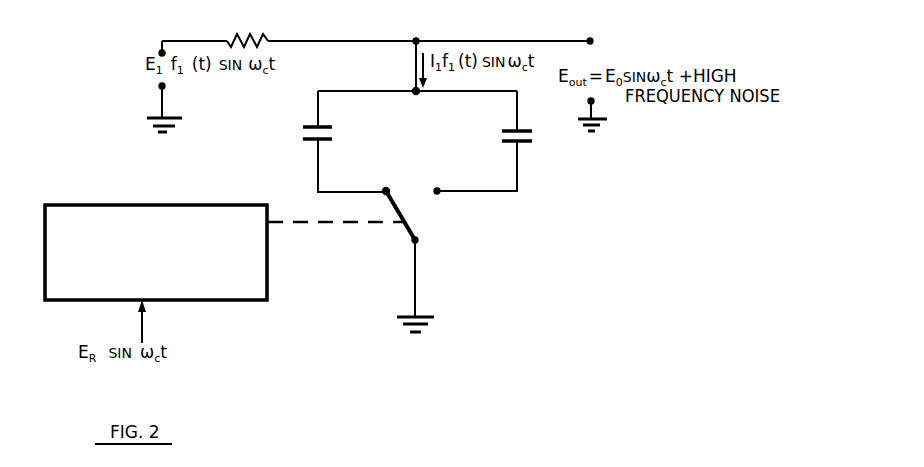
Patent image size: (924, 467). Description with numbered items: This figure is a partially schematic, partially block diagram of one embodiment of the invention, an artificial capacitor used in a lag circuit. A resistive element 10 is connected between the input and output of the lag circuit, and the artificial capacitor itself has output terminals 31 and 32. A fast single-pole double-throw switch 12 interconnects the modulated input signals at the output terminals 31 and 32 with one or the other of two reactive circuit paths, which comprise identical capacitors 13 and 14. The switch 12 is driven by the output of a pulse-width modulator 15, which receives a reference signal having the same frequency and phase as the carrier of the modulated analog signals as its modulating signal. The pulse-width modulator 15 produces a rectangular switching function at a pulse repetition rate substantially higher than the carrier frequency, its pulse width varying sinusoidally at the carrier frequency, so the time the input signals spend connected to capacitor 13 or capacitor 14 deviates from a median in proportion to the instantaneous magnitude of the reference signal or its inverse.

The resistive element 10 is at (241, 34).
The output terminal 31 is at (414, 89).
The capacitor 13 is at (322, 141).
The capacitor 14 is at (520, 143).
The single-pole double-throw switch 12 is at (413, 224).
The output terminal 32 is at (418, 243).
The pulse-width modulator 15 is at (118, 205).